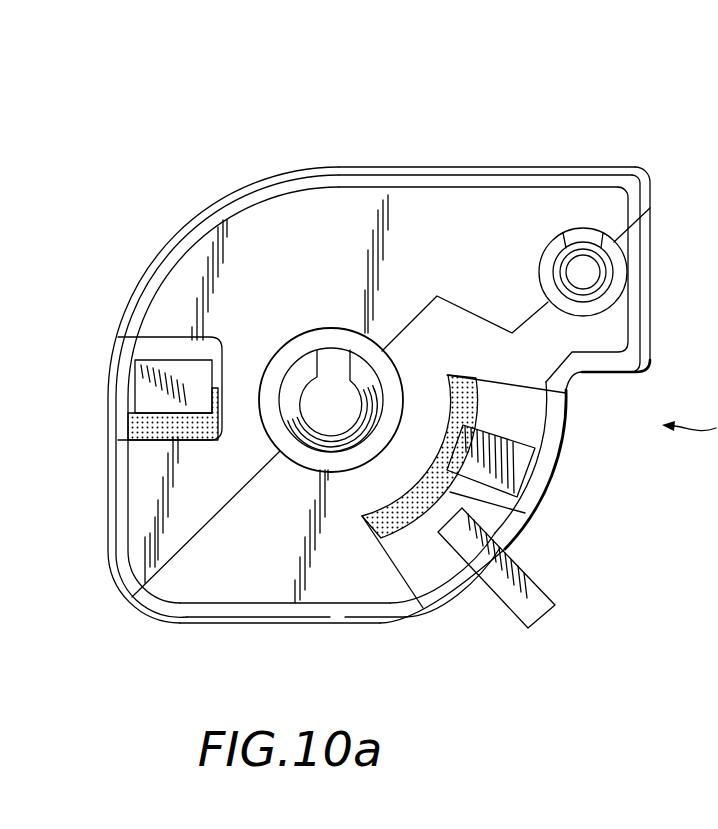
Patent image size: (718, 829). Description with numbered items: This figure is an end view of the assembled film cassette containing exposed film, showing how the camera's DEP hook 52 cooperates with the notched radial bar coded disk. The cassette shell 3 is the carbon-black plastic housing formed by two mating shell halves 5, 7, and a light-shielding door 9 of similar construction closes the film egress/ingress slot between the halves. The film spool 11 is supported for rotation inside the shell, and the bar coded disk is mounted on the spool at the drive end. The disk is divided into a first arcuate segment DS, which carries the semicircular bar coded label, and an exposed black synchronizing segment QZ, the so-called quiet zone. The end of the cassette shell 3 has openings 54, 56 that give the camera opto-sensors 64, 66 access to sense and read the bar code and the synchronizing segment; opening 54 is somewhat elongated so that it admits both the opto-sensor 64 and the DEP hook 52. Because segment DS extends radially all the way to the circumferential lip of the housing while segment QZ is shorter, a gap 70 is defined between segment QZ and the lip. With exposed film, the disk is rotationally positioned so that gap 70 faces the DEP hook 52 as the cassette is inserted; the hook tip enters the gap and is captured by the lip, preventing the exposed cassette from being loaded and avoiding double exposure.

The cassette shell 3 is at (148, 250).
The shell half 5 is at (496, 166).
The shell half 7 is at (288, 625).
The light-shielding door 9 is at (560, 234).
The film spool 11 is at (303, 470).
The DEP hook 52 is at (547, 613).
The opening 54 is at (390, 548).
The opening 56 is at (162, 338).
The opto-sensor 64 is at (517, 468).
The opto-sensor 66 is at (143, 393).
The gap 70 is at (512, 416).
The arcuate segment DS is at (122, 422).
The synchronizing segment QZ is at (497, 530).